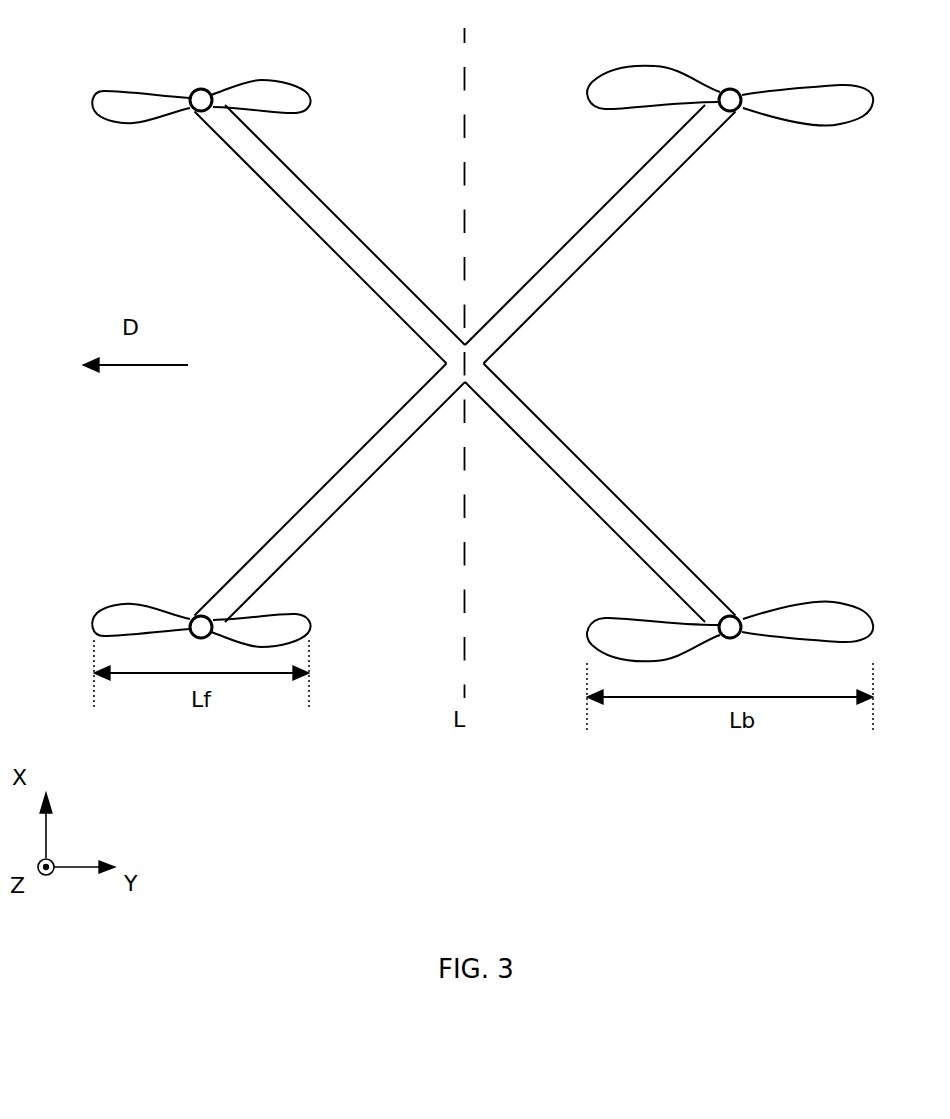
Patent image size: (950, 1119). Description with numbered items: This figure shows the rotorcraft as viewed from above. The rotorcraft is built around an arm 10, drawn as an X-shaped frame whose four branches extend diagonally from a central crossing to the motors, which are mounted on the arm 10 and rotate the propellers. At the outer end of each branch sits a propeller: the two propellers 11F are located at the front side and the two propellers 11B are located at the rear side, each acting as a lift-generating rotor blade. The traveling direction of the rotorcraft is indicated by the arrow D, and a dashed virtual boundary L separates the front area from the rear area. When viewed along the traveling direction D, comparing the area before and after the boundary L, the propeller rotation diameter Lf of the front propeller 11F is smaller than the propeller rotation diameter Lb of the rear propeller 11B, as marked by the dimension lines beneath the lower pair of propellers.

The arm 10 is at (483, 325).
The front propeller 11F is at (206, 100).
The rear propeller 11B is at (730, 100).